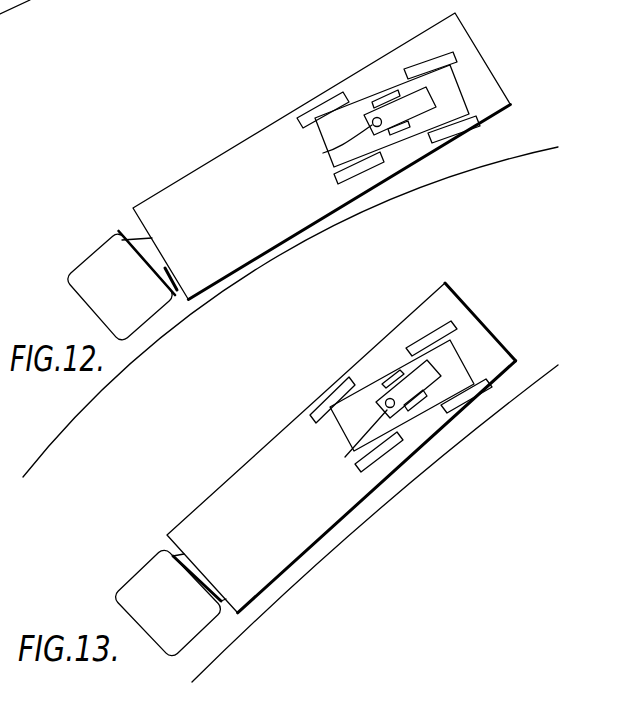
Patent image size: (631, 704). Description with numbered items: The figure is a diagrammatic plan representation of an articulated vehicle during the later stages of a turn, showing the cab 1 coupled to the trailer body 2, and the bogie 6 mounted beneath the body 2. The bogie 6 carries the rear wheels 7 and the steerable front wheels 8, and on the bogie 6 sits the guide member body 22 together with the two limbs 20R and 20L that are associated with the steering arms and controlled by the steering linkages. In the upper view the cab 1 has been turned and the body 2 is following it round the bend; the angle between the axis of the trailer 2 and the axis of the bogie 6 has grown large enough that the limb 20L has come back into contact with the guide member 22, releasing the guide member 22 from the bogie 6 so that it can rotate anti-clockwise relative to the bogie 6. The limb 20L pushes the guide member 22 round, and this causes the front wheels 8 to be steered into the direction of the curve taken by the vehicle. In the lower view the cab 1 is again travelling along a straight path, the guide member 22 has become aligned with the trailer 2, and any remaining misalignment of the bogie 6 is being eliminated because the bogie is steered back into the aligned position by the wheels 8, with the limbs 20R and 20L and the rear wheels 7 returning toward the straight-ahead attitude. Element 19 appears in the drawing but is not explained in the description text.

In FIG. 12, the cab 1 is at (103, 253).
In FIG. 13, the cab 1 is at (143, 585).
In FIG. 12, the trailer body 2 is at (190, 185).
In FIG. 13, the trailer body 2 is at (213, 510).
In FIG. 13, the bogie 6 is at (347, 424).
In FIG. 12, the rear wheels 7 is at (478, 117).
In FIG. 13, the rear wheels 7 is at (423, 338).
In FIG. 12, the steerable front wheels 8 is at (330, 103).
In FIG. 13, the steerable front wheels 8 is at (334, 398).
In FIG. 12, the link wire 19 is at (323, 153).
In FIG. 13, the link wire 19 is at (345, 457).
In FIG. 12, the limb 20L is at (400, 130).
In FIG. 13, the limb 20L is at (415, 397).
In FIG. 13, the limb 20R is at (388, 373).
In FIG. 12, the guide member body 22 is at (415, 100).
In FIG. 13, the guide member body 22 is at (432, 370).